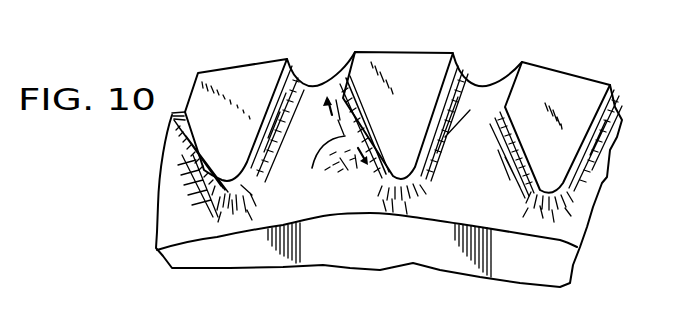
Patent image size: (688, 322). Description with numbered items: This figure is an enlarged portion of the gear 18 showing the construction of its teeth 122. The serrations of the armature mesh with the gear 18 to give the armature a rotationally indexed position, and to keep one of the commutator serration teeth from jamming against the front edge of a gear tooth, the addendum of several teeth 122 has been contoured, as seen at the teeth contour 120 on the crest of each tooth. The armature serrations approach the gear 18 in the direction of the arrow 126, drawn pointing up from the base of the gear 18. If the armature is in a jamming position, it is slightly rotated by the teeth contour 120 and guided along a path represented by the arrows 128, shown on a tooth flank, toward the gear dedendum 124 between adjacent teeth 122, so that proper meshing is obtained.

The gear 18 is at (585, 207).
The teeth contour 120 is at (543, 197).
The teeth 122 is at (255, 80).
The gear dedendum 124 is at (318, 82).
The arrow 126 is at (382, 220).
The arrows 128 is at (370, 175).